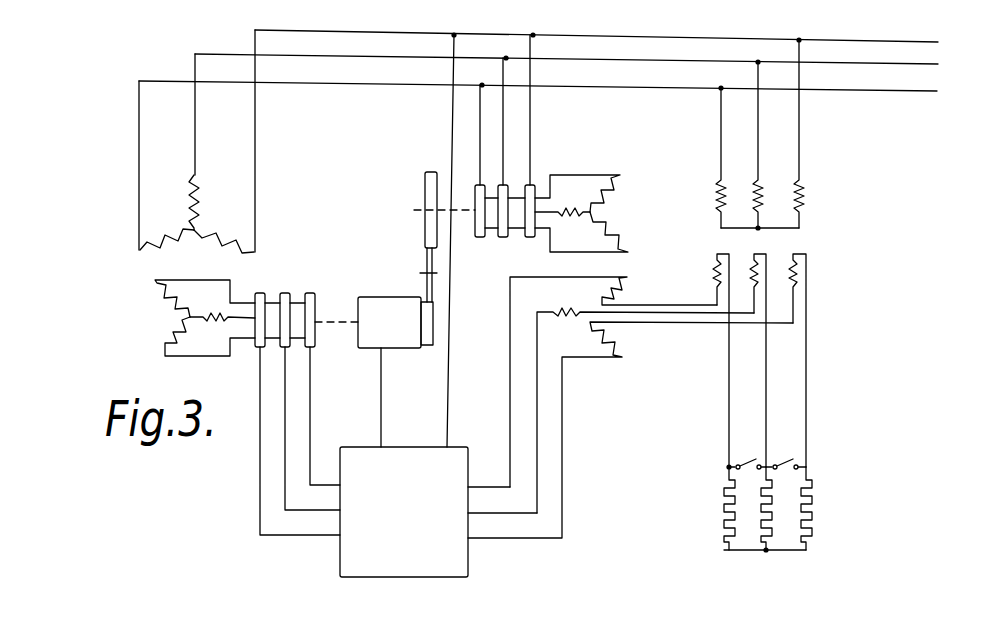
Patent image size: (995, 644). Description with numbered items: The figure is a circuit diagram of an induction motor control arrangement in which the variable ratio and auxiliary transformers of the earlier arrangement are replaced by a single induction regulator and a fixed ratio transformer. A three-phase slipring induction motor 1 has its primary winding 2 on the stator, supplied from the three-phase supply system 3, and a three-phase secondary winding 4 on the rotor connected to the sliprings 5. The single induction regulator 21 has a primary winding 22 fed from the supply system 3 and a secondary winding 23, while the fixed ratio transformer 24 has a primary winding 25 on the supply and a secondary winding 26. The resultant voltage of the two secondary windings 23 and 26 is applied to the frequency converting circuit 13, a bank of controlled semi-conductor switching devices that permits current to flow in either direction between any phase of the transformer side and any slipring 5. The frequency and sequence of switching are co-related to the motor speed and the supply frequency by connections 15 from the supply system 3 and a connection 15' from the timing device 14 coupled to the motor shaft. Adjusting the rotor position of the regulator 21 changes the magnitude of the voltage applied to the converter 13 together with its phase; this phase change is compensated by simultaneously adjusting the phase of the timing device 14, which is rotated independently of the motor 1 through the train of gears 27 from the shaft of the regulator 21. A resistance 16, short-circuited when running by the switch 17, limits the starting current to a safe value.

The slipring induction motor 1 is at (200, 271).
The primary winding 2 is at (197, 214).
The three-phase supply system 3 is at (553, 141).
The secondary winding 4 is at (197, 318).
The sliprings 5 is at (306, 400).
The frequency converting circuit 13 is at (412, 530).
The timing device 14 is at (398, 334).
The connections 15 is at (436, 241).
The connections 15' is at (367, 397).
The resistance 16 is at (783, 510).
The switch 17 is at (766, 450).
The induction regulator 21 is at (645, 276).
The primary winding 22 is at (557, 143).
The secondary winding 23 is at (630, 430).
The fixed ratio transformer 24 is at (782, 145).
The primary winding 25 is at (845, 248).
The secondary winding 26 is at (779, 360).
The train of gears 27 is at (434, 237).